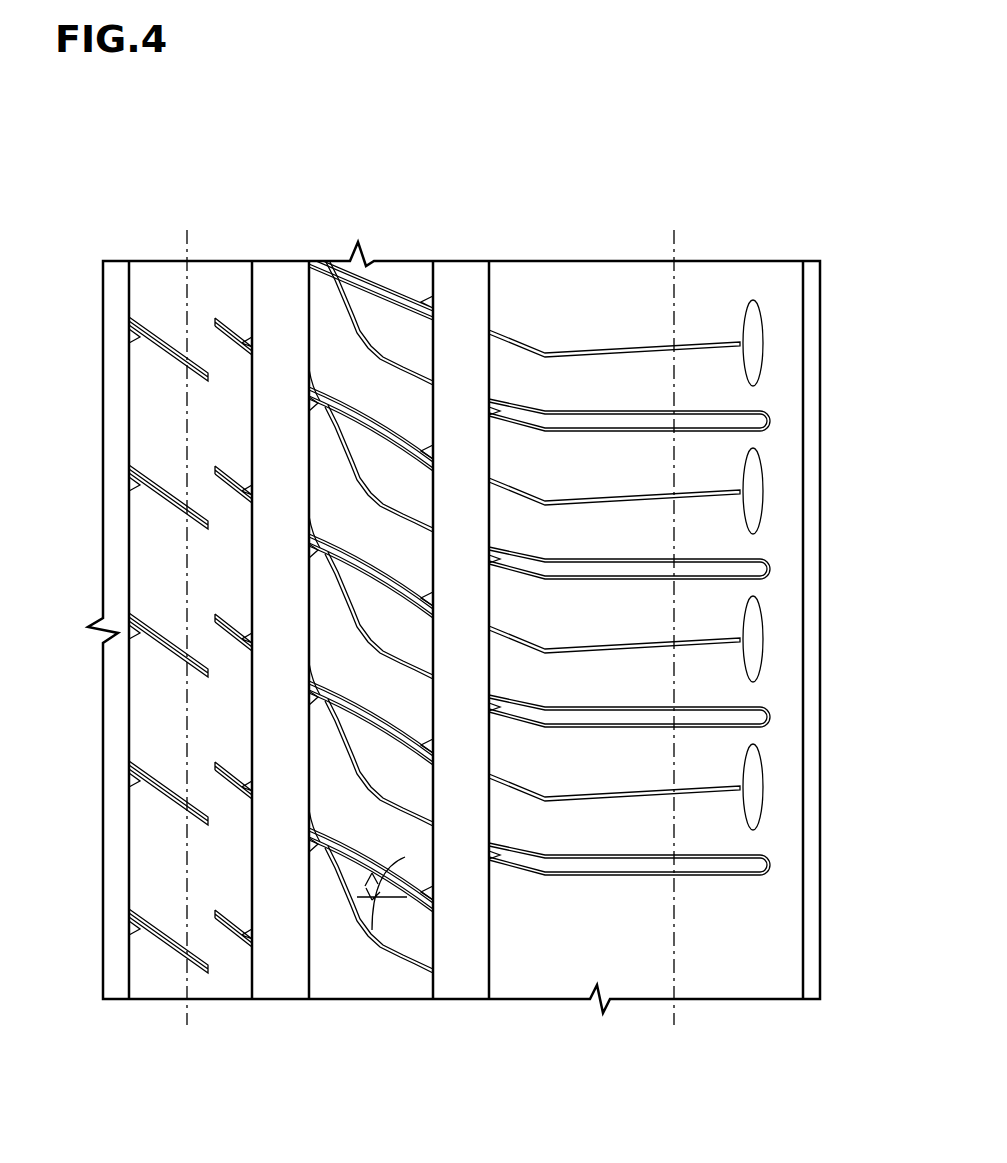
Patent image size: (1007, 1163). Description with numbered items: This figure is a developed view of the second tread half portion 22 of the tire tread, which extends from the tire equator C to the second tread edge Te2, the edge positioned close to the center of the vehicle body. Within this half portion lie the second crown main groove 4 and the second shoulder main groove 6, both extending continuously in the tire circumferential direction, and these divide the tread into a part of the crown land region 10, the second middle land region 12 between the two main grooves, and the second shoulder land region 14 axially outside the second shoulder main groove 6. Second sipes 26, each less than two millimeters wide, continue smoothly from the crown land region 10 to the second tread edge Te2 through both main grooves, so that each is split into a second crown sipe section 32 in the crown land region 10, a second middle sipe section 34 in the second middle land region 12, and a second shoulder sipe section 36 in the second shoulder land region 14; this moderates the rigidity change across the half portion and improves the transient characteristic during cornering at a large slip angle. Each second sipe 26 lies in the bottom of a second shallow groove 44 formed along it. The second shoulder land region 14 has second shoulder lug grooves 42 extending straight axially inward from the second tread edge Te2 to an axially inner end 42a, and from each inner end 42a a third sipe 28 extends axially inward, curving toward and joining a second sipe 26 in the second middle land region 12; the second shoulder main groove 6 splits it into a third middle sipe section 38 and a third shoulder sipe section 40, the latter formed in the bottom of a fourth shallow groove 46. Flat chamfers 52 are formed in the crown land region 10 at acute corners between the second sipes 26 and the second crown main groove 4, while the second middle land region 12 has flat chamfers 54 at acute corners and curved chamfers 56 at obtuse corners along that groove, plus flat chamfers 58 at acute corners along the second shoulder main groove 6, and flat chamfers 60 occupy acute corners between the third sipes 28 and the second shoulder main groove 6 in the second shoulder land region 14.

The second tread half portion 22 is at (421, 144).
The crown land region 10 is at (158, 275).
The second crown main groove 4 is at (288, 291).
The second middle land region 12 is at (392, 306).
The second shoulder main groove 6 is at (466, 291).
The second shoulder land region 14 is at (584, 311).
The tire equator C is at (185, 614).
The second tread edge Te2 is at (676, 305).
The second sipes 26 is at (886, 437).
The third sipes 28 is at (886, 622).
The second crown sipe section 32 is at (240, 493).
The second middle sipe section 34 is at (387, 584).
The second shoulder sipe section 36 is at (400, 657).
The third middle sipe section 38 is at (489, 658).
The third shoulder sipe section 40 is at (500, 712).
The second shoulder lug grooves 42 is at (620, 717).
The axially inner end 42a is at (497, 700).
The second shallow grooves 44 is at (357, 577).
The fourth shallow grooves 46 is at (318, 812).
The flat chamfers 52 is at (240, 493).
The flat chamfers 54 is at (318, 548).
The curved chamfers 56 is at (312, 525).
The flat chamfers 58 is at (432, 856).
The flat chamfers 60 is at (312, 805).